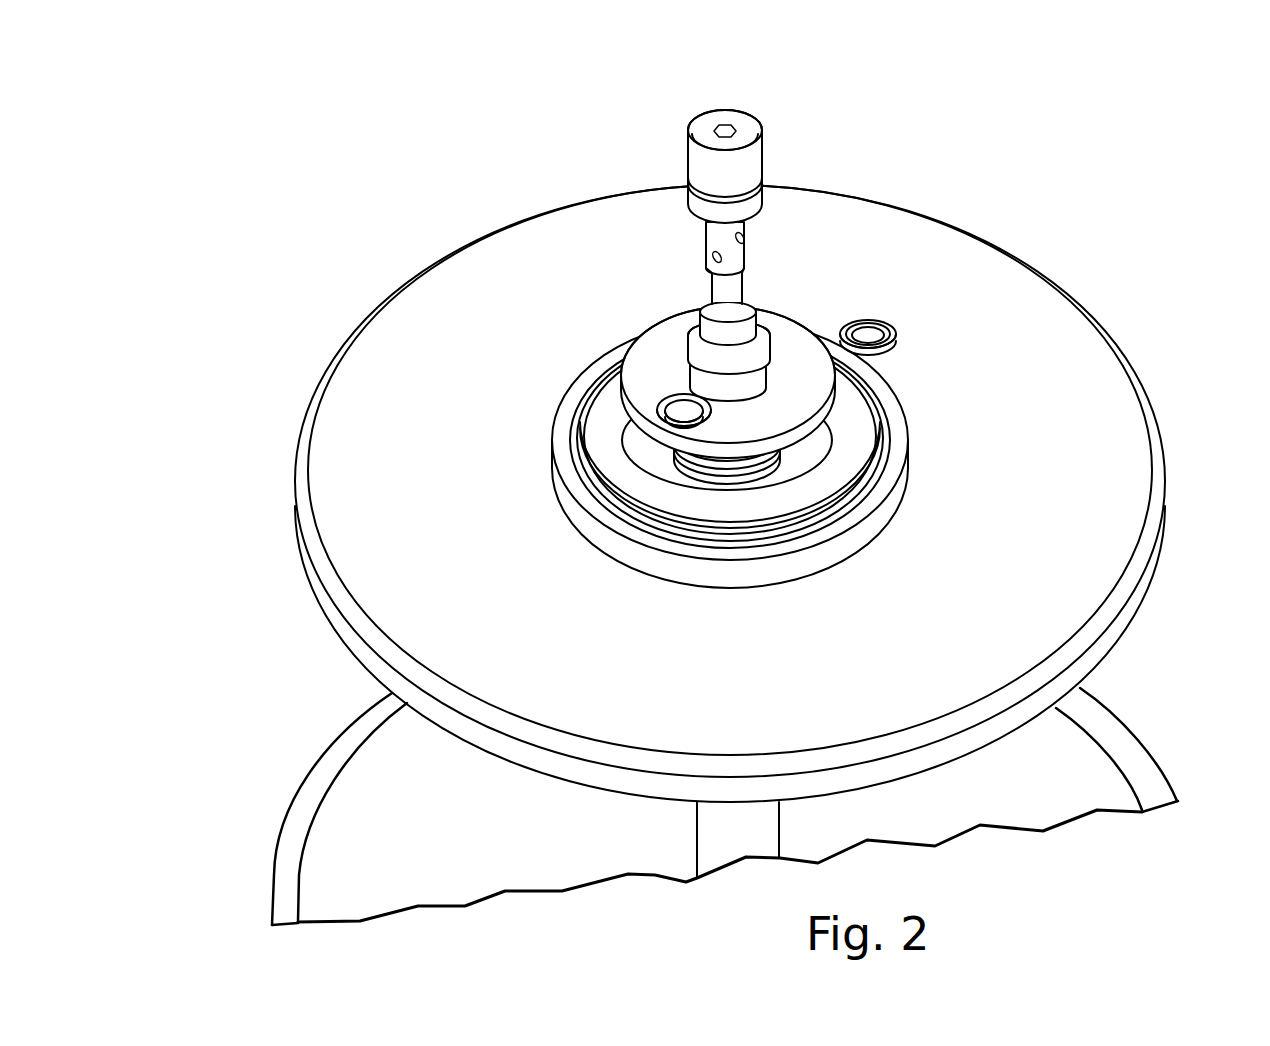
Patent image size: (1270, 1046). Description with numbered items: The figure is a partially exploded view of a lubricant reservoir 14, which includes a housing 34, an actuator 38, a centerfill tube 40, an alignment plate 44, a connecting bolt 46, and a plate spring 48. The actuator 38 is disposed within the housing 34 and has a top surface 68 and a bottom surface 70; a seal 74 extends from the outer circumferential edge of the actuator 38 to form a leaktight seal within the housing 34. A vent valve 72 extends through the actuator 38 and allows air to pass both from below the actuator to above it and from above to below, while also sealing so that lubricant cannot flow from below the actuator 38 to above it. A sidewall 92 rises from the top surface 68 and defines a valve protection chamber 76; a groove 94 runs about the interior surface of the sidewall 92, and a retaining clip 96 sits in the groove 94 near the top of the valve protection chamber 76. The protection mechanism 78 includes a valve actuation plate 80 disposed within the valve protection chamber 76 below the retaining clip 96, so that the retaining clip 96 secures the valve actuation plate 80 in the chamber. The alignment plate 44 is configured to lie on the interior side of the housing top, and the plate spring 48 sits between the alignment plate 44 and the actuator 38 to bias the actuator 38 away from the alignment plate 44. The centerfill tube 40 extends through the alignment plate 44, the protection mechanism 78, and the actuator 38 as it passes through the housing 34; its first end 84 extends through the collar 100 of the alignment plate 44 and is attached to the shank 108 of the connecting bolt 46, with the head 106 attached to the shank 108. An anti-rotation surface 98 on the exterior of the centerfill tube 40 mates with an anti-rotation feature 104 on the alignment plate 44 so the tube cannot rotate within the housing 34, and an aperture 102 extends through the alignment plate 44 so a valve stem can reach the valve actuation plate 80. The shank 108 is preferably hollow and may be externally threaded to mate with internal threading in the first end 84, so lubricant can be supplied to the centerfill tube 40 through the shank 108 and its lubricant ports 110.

The lubricant reservoir 14 is at (222, 236).
The housing 34 is at (318, 790).
The actuator 38 is at (1031, 261).
The centerfill tube 40 is at (694, 848).
The alignment plate 44 is at (686, 302).
The connecting bolt 46 is at (710, 112).
The plate spring 48 is at (765, 456).
The top surface 68 is at (1024, 386).
The bottom surface 70 is at (1130, 622).
The vent valve 72 is at (879, 322).
The seal 74 is at (1166, 533).
The valve protection chamber 76 is at (570, 375).
The protection mechanism 78 is at (860, 449).
The valve actuation plate 80 is at (608, 455).
The first end 84 is at (699, 299).
The sidewall 92 is at (808, 568).
The groove 94 is at (601, 359).
The retaining clip 96 is at (578, 430).
The anti-rotation surface 98 is at (720, 352).
The collar 100 is at (747, 392).
The aperture 102 is at (668, 396).
The anti-rotation feature 104 is at (713, 376).
The head 106 is at (743, 133).
The shank 108 is at (748, 251).
The lubricant ports 110 is at (748, 241).